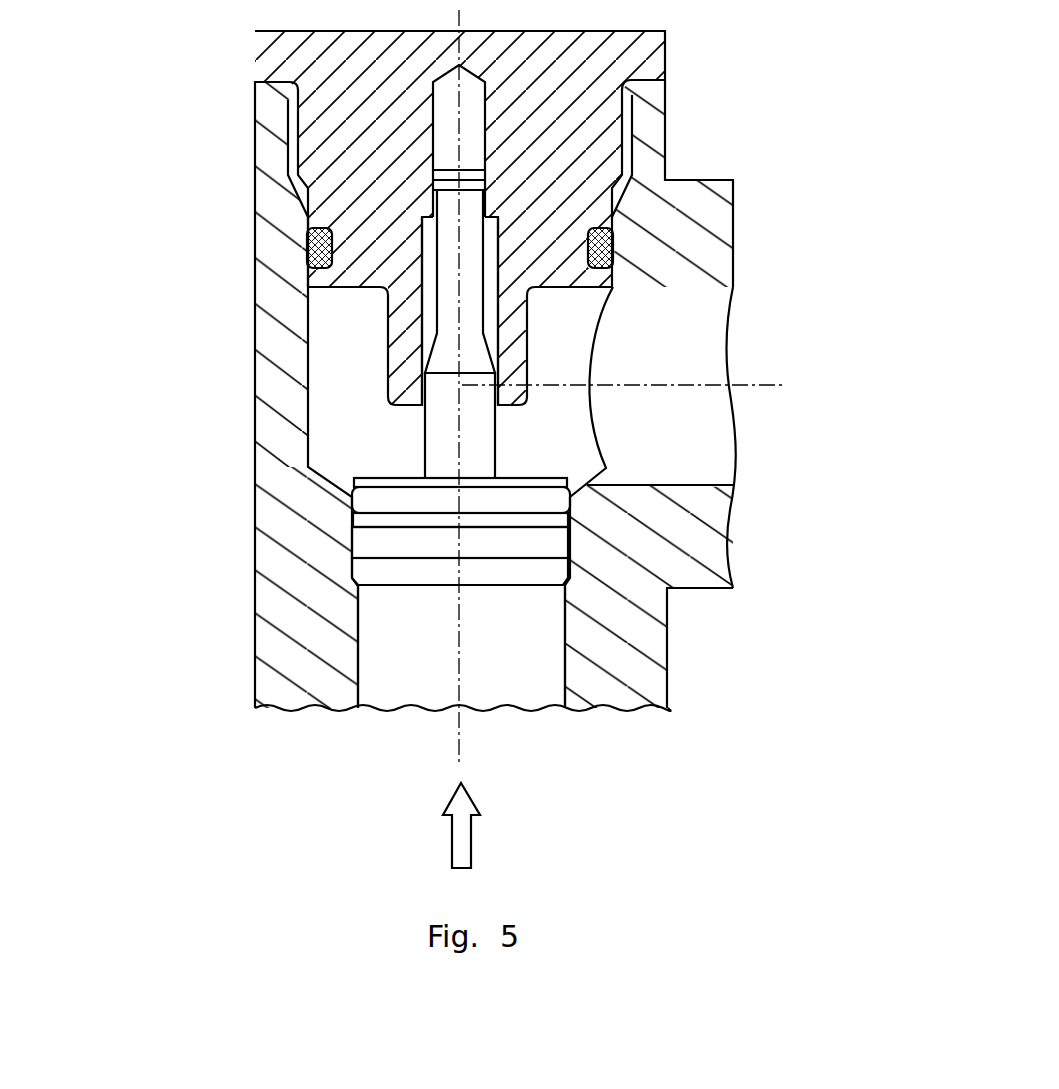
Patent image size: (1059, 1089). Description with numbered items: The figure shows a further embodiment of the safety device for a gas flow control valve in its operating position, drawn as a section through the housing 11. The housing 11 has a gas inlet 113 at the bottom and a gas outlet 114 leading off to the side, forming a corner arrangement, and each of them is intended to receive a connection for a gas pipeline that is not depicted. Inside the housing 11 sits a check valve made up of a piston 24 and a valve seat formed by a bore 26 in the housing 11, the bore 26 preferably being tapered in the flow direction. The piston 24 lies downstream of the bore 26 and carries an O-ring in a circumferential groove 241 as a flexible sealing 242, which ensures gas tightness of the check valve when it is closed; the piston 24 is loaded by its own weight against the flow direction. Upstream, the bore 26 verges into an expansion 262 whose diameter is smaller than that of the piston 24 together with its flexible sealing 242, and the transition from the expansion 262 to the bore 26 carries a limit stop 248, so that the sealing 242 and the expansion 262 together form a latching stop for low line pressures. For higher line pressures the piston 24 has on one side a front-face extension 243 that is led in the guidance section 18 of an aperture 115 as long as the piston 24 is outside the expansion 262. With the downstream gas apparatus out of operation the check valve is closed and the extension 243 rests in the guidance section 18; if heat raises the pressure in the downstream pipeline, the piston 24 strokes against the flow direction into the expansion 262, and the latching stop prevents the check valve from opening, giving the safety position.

The housing 11 is at (283, 305).
The guidance section 18 is at (468, 128).
The front-face extension 243 is at (468, 232).
The aperture 115 is at (488, 287).
The gas outlet 114 is at (705, 320).
The piston 24 is at (639, 523).
The circumferential groove 241 is at (535, 500).
The flexible sealing 242 is at (570, 504).
The bore 26 is at (568, 540).
The limit stop 248 is at (570, 557).
The expansion 262 is at (540, 570).
The gas inlet 113 is at (383, 653).